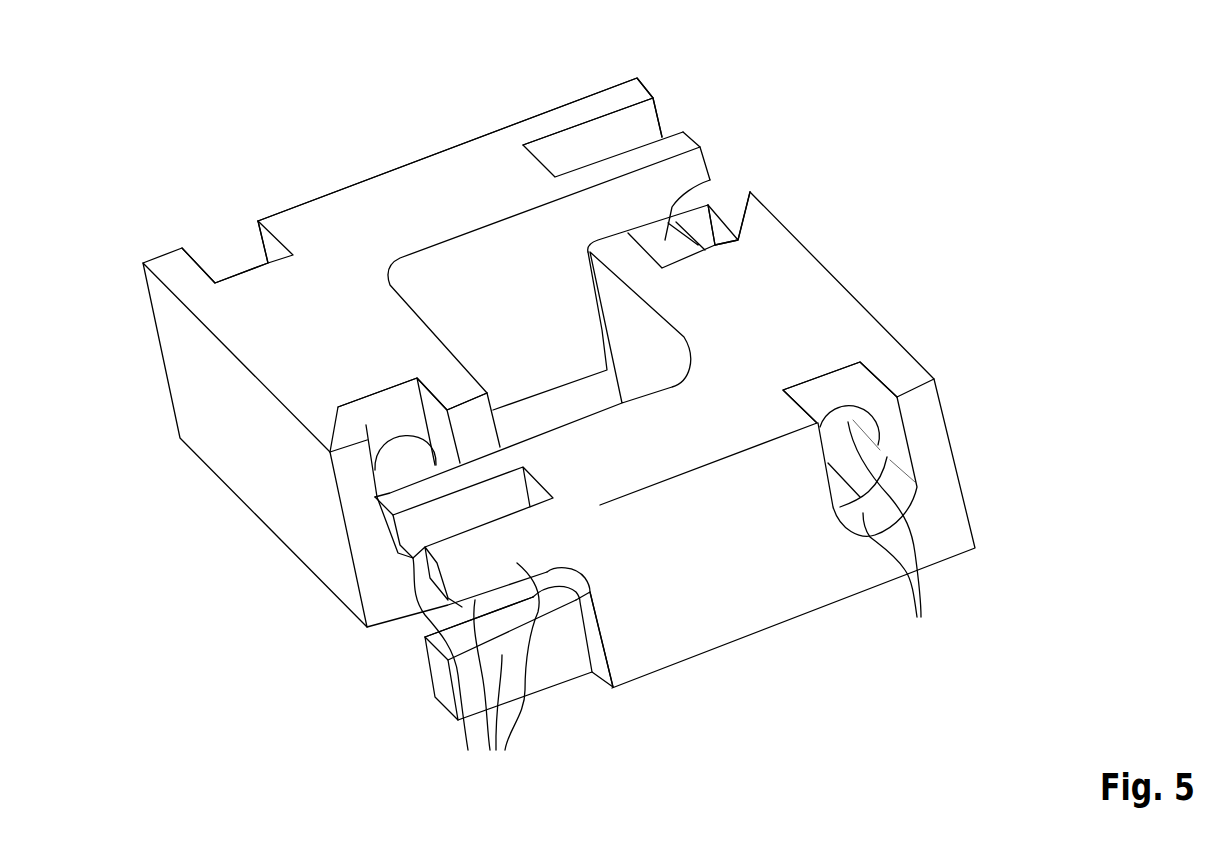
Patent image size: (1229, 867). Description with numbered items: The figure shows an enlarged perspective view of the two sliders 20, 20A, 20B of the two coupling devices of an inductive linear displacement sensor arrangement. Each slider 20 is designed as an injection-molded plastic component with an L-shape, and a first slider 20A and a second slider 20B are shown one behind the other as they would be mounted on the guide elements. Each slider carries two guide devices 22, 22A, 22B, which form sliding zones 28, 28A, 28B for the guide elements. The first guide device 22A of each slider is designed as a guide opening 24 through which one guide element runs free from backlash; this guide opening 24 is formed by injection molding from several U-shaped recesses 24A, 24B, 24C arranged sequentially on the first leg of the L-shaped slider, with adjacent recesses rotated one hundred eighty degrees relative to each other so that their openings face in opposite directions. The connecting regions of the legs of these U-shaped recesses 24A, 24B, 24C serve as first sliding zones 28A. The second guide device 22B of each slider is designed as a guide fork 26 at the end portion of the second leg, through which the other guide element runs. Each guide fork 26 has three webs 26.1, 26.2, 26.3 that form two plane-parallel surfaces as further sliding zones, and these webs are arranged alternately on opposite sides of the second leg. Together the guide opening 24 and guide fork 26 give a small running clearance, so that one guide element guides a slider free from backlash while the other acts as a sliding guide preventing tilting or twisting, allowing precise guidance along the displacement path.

The slider 20 is at (559, 399).
The first slider 20A is at (835, 297).
The second slider 20B is at (383, 196).
The guide device 22 is at (645, 354).
The first guide device 22A is at (334, 406).
The second guide device 22B is at (678, 100).
The guide opening 24 is at (583, 365).
The U-shaped recess 24A is at (366, 427).
The U-shaped recess 24B is at (385, 515).
The U-shaped recess 24C is at (243, 267).
The guide fork 26 is at (522, 399).
The web 26.1 is at (683, 143).
The web 26.2 is at (700, 190).
The web 26.3 is at (585, 108).
The sliding zone 28 is at (687, 602).
The first sliding zone 28A is at (894, 538).
The sliding zone 28B is at (476, 670).